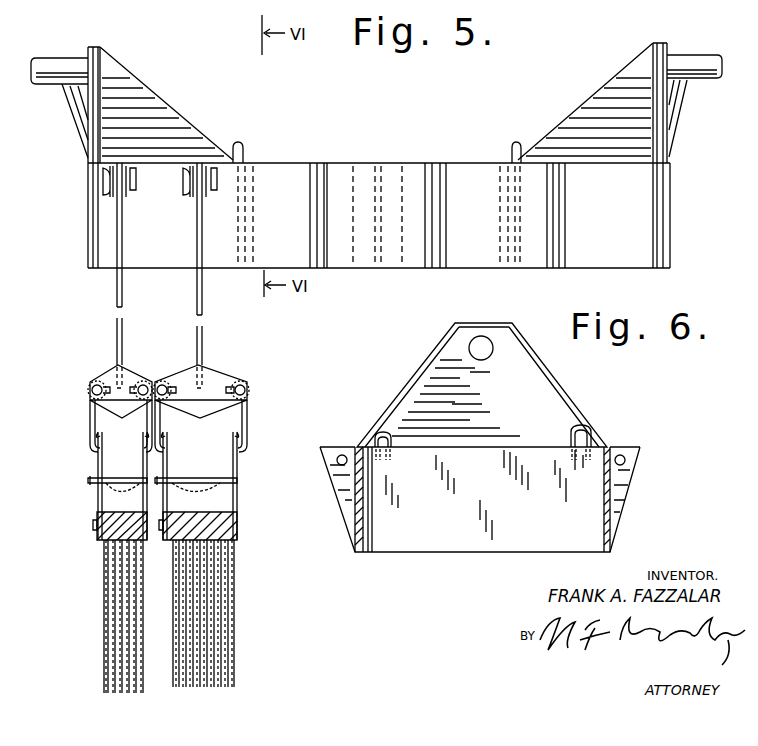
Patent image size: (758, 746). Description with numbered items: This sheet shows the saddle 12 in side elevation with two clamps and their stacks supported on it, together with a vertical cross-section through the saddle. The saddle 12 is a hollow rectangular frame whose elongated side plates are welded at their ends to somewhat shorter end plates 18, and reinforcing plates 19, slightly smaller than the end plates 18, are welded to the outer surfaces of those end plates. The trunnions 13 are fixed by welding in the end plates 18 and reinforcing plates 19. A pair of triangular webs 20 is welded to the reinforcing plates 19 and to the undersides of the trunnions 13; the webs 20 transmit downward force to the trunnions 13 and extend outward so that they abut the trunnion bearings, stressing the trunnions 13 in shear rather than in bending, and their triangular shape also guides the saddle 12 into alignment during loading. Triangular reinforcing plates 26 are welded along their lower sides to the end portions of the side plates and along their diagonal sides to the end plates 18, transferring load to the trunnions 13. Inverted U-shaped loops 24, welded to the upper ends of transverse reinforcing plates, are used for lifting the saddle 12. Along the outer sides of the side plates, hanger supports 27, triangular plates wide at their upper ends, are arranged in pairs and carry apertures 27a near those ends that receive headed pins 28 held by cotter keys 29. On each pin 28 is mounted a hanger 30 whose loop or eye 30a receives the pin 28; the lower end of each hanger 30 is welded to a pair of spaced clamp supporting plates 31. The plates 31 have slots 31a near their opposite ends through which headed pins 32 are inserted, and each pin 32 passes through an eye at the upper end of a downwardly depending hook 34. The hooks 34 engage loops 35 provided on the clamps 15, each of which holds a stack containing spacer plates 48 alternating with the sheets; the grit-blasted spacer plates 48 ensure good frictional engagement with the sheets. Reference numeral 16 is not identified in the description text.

In FIG. 5, the saddle 12 is at (481, 126).
In FIG. 6, the saddle 12 is at (414, 345).
In FIG. 5, the trunnion 13 is at (53, 62).
In FIG. 5, the clamp 15 is at (159, 508).
In FIG. 5, the wire strands 16 is at (85, 596).
In FIG. 5, the end plate 18 is at (92, 268).
In FIG. 5, the reinforcing plate 19 is at (90, 236).
In FIG. 5, the triangular web 20 is at (78, 122).
In FIG. 5, the inverted U-shaped loop 24 is at (240, 142).
In FIG. 6, the inverted U-shaped loop 24 is at (383, 432).
In FIG. 5, the triangular reinforcing plate 26 is at (153, 97).
In FIG. 6, the hanger support 27 is at (340, 500).
In FIG. 6, the aperture 27a is at (342, 454).
In FIG. 5, the headed pin 28 is at (184, 182).
In FIG. 5, the cotter key 29 is at (226, 172).
In FIG. 5, the hanger 30 is at (123, 296).
In FIG. 5, the loop or eye 30a is at (102, 180).
In FIG. 5, the clamp supporting plate 31 is at (106, 375).
In FIG. 5, the slot 31a is at (178, 385).
In FIG. 5, the headed pin 32 is at (90, 388).
In FIG. 5, the hook 34 is at (88, 420).
In FIG. 5, the loop 35 is at (97, 460).
In FIG. 5, the spacer plate 48 is at (100, 495).